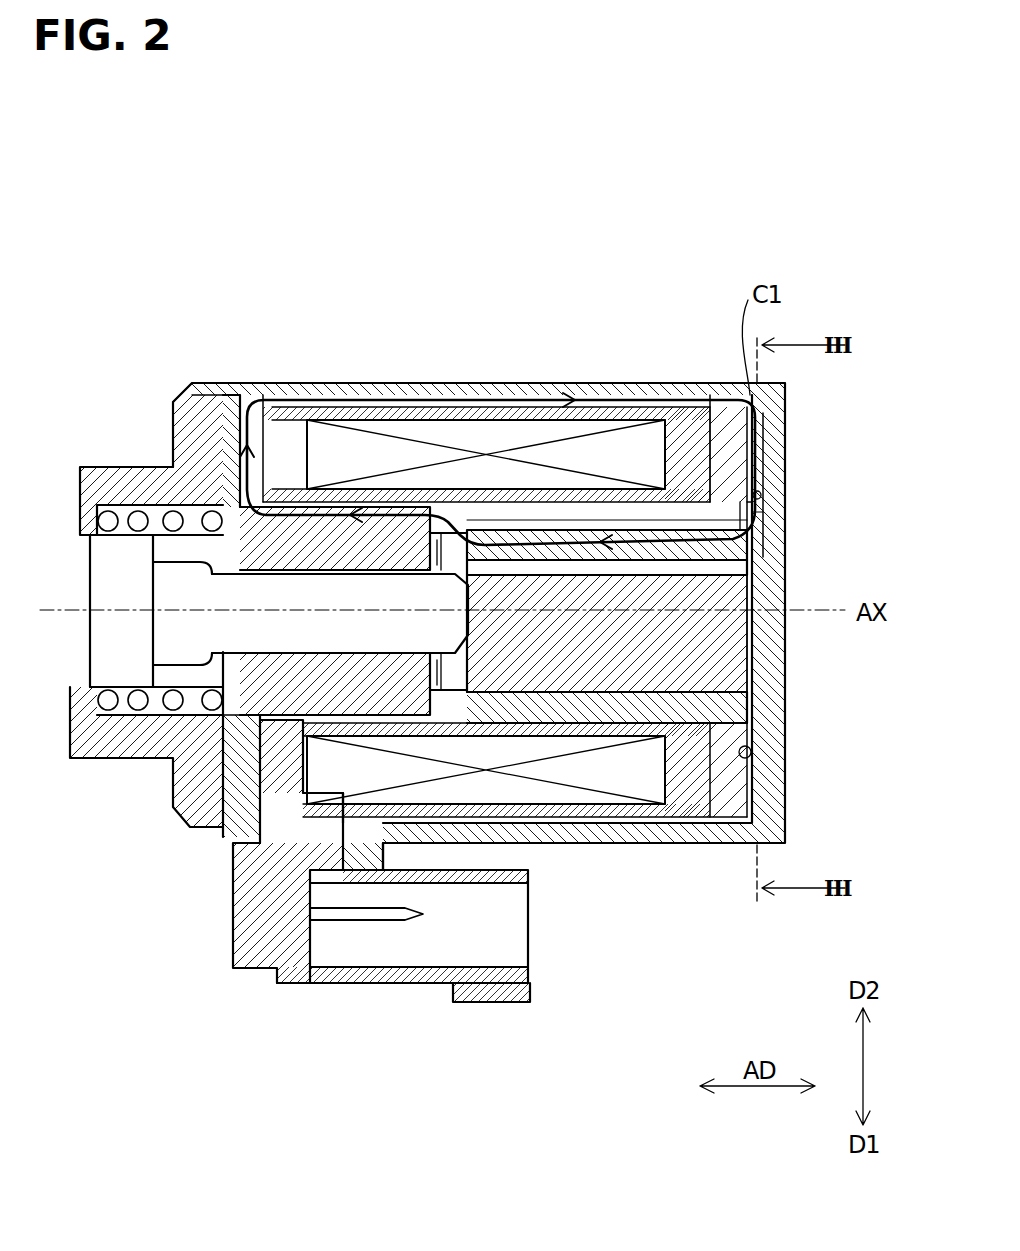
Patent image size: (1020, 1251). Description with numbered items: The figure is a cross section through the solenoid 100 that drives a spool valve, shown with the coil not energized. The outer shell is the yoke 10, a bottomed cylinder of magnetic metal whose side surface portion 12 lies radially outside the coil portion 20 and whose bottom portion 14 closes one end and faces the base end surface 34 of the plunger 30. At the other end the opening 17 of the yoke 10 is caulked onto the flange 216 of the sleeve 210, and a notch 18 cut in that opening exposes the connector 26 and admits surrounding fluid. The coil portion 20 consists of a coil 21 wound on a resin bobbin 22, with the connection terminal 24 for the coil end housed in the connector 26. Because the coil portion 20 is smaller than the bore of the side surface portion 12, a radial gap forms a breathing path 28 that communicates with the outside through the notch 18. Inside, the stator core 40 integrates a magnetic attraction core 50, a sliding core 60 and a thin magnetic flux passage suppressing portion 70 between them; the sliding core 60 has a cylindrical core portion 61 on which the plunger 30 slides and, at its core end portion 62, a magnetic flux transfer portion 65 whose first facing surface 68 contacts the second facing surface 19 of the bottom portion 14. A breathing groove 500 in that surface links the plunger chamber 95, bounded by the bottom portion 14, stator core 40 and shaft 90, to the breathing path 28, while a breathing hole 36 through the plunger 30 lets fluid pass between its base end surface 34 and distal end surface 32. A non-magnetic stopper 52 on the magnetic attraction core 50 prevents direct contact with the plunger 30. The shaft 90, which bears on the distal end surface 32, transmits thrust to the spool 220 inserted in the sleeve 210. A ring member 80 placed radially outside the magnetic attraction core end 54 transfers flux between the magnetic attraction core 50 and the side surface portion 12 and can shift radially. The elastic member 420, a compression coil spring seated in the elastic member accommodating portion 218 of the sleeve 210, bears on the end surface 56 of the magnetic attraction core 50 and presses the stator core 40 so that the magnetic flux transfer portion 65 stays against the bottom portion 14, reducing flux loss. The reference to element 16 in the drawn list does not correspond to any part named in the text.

The solenoid 100 is at (798, 247).
The yoke 10 is at (801, 402).
The side surface portion 12 is at (303, 382).
The bottom portion 14 is at (770, 796).
The bracket 16 is at (288, 913).
The opening 17 is at (172, 425).
The notch 18 is at (380, 875).
The second facing surface 19 is at (752, 752).
The coil portion 20 is at (740, 897).
The coil 21 is at (604, 785).
The bobbin 22 is at (674, 785).
The connection terminal 24 is at (387, 915).
The connector 26 is at (551, 1008).
The breathing path 28 is at (566, 817).
The plunger 30 is at (745, 655).
The distal end surface 32 is at (400, 545).
The base end surface 34 is at (760, 640).
The breathing hole 36 is at (750, 590).
The stator core 40 is at (682, 268).
The magnetic attraction core 50 is at (408, 383).
The stopper 52 is at (452, 695).
The magnetic attraction core end 54 is at (153, 562).
The end surface 56 is at (215, 652).
The sliding core 60 is at (702, 480).
The core portion 61 is at (642, 478).
The core end portion 62 is at (746, 555).
The magnetic flux transfer portion 65 is at (766, 453).
The first facing surface 68 is at (756, 518).
The magnetic flux passage suppressing portion 70 is at (515, 535).
The ring member 80 is at (238, 452).
The shaft 90 is at (212, 790).
The plunger chamber 95 is at (705, 730).
The sleeve 210 is at (90, 465).
The flange 216 is at (228, 822).
The elastic member accommodating portion 218 is at (143, 505).
The spool 220 is at (93, 540).
The elastic member 420 is at (150, 690).
The breathing groove 500 is at (762, 498).